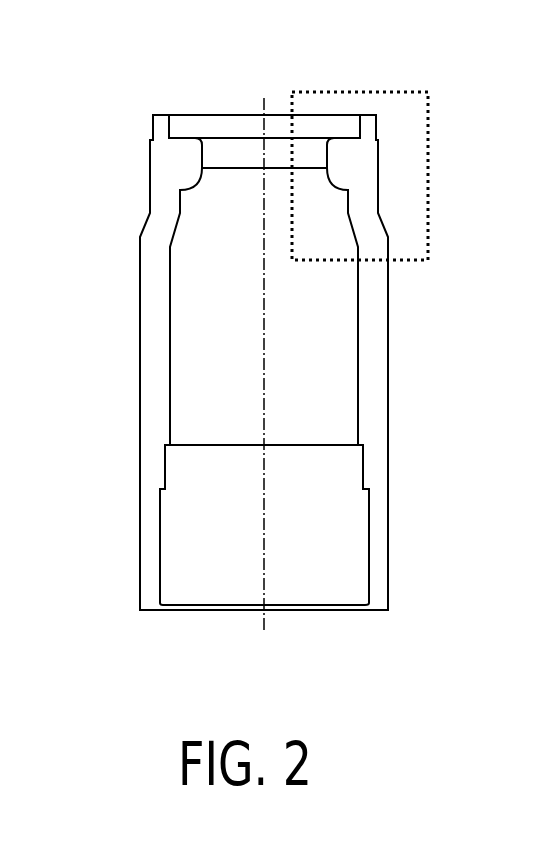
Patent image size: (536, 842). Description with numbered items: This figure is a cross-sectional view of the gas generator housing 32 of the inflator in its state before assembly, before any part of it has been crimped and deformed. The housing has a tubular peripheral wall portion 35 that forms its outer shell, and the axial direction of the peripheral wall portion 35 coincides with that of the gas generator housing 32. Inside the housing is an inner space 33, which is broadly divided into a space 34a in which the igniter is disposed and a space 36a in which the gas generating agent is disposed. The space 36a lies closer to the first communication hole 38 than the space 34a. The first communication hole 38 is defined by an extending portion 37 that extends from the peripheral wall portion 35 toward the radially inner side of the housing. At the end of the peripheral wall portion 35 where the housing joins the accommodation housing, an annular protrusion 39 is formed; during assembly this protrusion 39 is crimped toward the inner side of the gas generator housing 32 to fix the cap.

The gas generator housing 32 is at (243, 374).
The inner space 33 is at (189, 386).
The space in which the igniter is disposed 34a is at (215, 525).
The peripheral wall portion 35 is at (167, 197).
The space in which the gas generating agent is disposed 36a is at (208, 390).
The extending portion 37 is at (192, 158).
The first communication hole 38 is at (245, 153).
The annular protrusion 39 is at (158, 130).